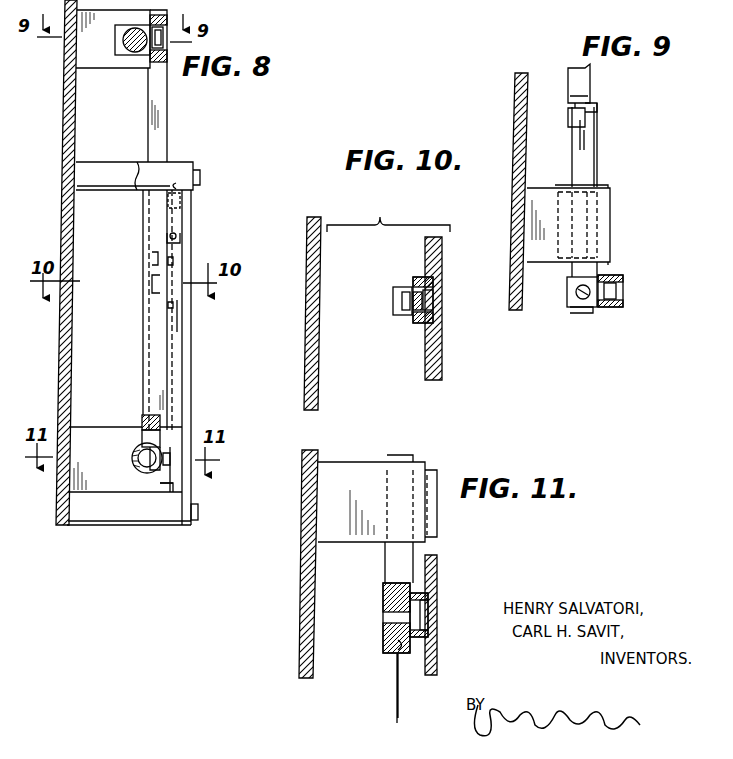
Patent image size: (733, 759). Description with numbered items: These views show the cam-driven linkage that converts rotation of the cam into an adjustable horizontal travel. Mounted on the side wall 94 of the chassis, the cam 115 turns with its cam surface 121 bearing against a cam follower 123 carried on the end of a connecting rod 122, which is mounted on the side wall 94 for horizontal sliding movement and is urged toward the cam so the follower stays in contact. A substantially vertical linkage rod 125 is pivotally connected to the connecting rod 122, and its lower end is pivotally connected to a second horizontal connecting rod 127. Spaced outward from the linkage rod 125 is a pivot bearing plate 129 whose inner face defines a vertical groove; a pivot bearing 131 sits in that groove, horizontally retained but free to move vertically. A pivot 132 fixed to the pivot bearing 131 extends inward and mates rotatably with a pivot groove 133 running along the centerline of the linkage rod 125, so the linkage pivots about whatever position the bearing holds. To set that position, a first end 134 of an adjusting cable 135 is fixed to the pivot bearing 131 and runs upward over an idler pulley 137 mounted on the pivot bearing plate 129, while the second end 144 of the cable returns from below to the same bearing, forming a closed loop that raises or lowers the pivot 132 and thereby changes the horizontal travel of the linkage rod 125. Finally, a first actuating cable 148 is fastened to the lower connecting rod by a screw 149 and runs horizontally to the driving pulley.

In FIG. 9, the side wall 94 is at (515, 97).
In FIG. 10, the side wall 94 is at (307, 270).
In FIG. 11, the side wall 94 is at (305, 600).
In FIG. 9, the cam 115 is at (590, 80).
In FIG. 9, the cam surface 121 is at (597, 107).
In FIG. 9, the connecting rod 122 is at (597, 162).
In FIG. 9, the cam follower 123 is at (583, 125).
In FIG. 8, the linkage rod 125 is at (157, 398).
In FIG. 9, the linkage rod 125 is at (620, 280).
In FIG. 10, the linkage rod 125 is at (408, 323).
In FIG. 11, the linkage rod 125 is at (427, 597).
In FIG. 8, the second horizontal connecting rod 127 is at (132, 463).
In FIG. 11, the second horizontal connecting rod 127 is at (413, 553).
In FIG. 8, the pivot bearing plate 129 is at (187, 237).
In FIG. 10, the pivot bearing plate 129 is at (437, 360).
In FIG. 11, the pivot bearing plate 129 is at (437, 665).
In FIG. 8, the pivot bearing 131 is at (180, 263).
In FIG. 10, the pivot bearing 131 is at (430, 287).
In FIG. 8, the pivot 132 is at (150, 283).
In FIG. 10, the pivot 132 is at (400, 302).
In FIG. 8, the pivot groove 133 is at (152, 260).
In FIG. 10, the pivot groove 133 is at (405, 287).
In FIG. 8, the first end of adjusting cable 134 is at (178, 240).
In FIG. 8, the adjusting cable 135 is at (172, 210).
In FIG. 8, the idler pulley 137 is at (182, 188).
In FIG. 8, the second end of cable 144 is at (177, 315).
In FIG. 8, the first actuating cable 148 is at (130, 527).
In FIG. 11, the first actuating cable 148 is at (398, 713).
In FIG. 8, the screw 149 is at (150, 513).
In FIG. 11, the screw 149 is at (405, 650).